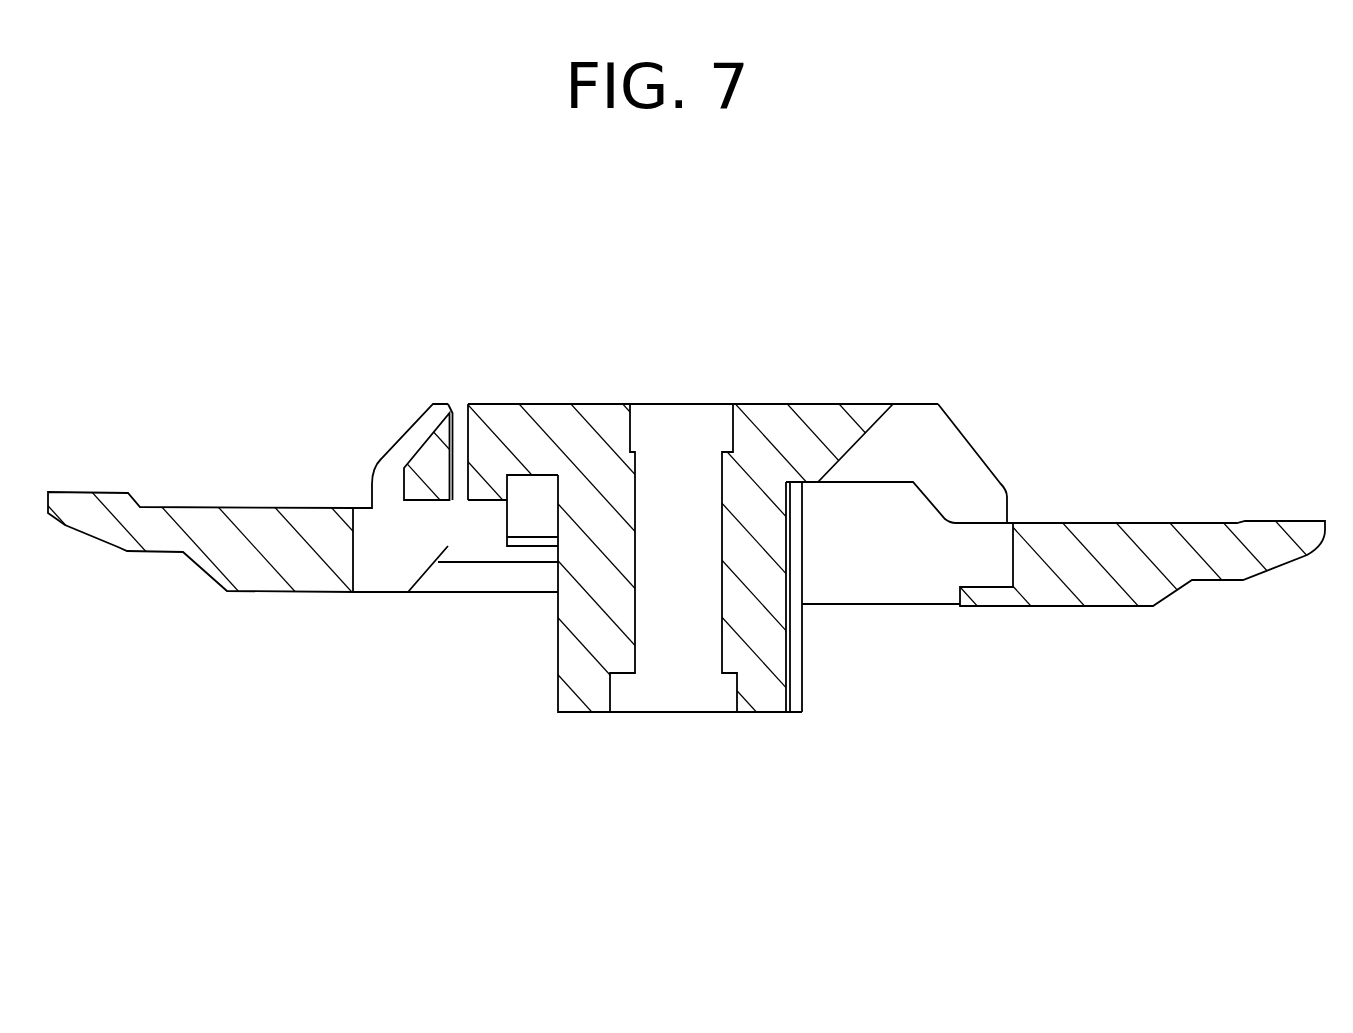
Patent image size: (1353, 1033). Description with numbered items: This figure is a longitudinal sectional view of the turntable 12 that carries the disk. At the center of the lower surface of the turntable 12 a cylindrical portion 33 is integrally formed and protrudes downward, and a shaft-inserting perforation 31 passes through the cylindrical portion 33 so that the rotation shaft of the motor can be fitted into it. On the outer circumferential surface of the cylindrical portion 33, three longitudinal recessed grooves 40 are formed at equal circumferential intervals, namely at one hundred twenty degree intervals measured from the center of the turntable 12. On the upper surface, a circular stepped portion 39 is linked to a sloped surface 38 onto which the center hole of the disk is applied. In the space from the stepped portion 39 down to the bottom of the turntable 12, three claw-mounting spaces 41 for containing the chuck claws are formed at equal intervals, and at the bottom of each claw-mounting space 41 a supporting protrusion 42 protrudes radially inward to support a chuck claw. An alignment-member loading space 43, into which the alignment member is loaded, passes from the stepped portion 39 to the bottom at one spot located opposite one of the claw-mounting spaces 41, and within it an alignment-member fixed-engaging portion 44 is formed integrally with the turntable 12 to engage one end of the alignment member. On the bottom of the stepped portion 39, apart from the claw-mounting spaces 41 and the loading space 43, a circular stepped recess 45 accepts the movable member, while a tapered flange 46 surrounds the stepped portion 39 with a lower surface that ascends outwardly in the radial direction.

The turntable 12 is at (430, 378).
The shaft-inserting perforation 31 is at (685, 492).
The cylindrical portion 33 is at (565, 650).
The sloped surface 38 is at (376, 458).
The circular stepped portion 39 is at (552, 404).
The longitudinal recessed groove 40 is at (790, 655).
The claw-mounting space 41 is at (912, 445).
The supporting protrusion 42 is at (973, 604).
The alignment-member loading space 43 is at (367, 593).
The alignment-member fixed-engaging portion 44 is at (448, 404).
The circular stepped recess 45 is at (528, 517).
The tapered flange 46 is at (1290, 560).